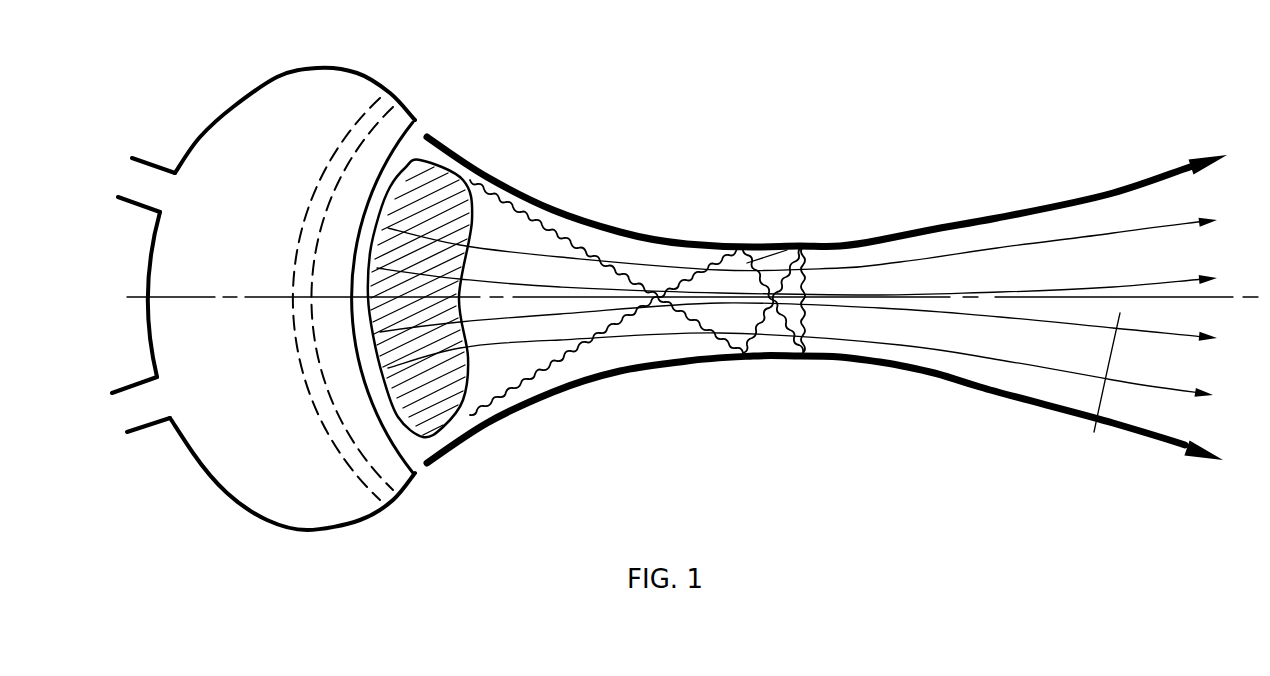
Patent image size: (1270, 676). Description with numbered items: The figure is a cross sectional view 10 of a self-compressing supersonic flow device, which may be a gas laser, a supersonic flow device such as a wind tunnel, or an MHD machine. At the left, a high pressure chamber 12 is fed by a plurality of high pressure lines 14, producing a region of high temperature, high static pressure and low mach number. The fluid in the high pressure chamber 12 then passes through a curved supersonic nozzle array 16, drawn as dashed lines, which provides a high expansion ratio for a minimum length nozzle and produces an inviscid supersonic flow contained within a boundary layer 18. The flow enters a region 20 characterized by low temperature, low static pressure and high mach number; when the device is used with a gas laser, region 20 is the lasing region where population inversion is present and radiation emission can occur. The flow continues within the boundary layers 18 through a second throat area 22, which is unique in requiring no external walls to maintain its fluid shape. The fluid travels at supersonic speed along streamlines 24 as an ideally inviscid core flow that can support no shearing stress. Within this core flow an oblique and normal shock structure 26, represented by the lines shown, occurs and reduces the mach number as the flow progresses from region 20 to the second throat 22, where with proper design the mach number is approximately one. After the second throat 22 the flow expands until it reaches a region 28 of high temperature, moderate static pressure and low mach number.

The cross sectional view 10 is at (692, 162).
The high pressure chamber 12 is at (360, 75).
The high pressure lines 14 is at (128, 176).
The curved supersonic nozzle array 16 is at (372, 128).
The boundary layer 18 is at (999, 218).
The region 20 is at (413, 348).
The second throat area 22 is at (743, 247).
The streamlines 24 is at (1168, 282).
The oblique and normal shock structure 26 is at (803, 247).
The region 28 is at (1101, 382).